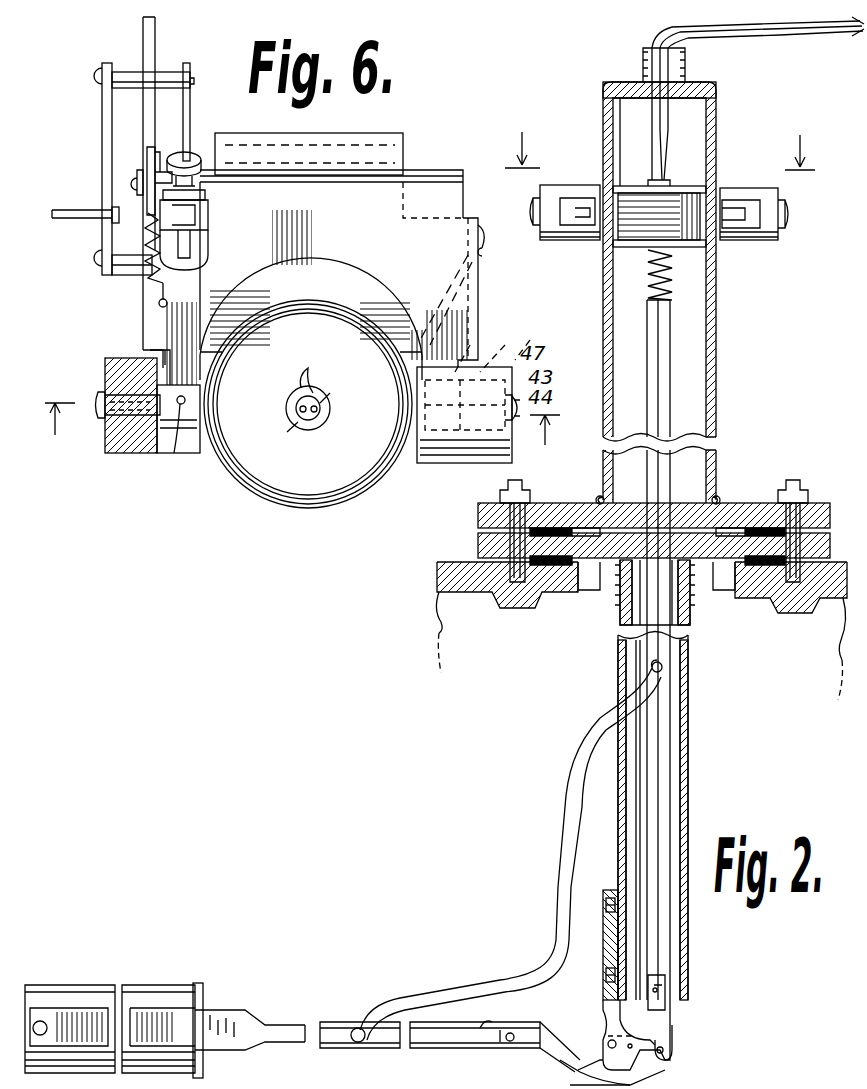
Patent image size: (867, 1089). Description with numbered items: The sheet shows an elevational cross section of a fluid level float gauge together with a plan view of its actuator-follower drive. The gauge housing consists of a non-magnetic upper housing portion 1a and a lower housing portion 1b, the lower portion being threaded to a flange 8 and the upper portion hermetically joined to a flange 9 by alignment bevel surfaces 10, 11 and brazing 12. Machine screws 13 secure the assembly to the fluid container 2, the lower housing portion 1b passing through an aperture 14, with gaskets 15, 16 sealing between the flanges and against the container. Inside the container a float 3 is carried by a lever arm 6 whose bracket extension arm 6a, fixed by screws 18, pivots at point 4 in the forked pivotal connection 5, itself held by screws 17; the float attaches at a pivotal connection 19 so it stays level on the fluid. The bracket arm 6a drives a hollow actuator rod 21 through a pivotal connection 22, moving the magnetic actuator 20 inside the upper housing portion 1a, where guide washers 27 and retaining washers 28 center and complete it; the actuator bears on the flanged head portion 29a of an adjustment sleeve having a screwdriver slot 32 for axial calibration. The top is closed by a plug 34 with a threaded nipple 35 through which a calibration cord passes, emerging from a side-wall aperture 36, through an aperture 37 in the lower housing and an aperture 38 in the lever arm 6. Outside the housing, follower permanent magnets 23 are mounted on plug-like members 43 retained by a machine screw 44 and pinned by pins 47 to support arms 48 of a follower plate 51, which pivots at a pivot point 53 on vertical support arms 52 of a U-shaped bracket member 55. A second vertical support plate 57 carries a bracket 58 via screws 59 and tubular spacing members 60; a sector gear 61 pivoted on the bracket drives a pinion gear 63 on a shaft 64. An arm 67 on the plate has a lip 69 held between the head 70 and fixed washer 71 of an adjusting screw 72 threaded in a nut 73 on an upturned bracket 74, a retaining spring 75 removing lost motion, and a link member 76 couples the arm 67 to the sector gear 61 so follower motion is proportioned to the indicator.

In FIG. 6, the upper housing portion 1a is at (335, 505).
In FIG. 2, the upper housing portion 1a is at (717, 320).
In FIG. 2, the lower housing portion 1b is at (690, 720).
In FIG. 2, the fluid container 2 is at (462, 592).
In FIG. 6, the float 3 is at (302, 437).
In FIG. 2, the float 3 is at (175, 985).
In FIG. 2, the pivotal connection point 4 is at (606, 1042).
In FIG. 2, the pivotal connection 5 is at (603, 948).
In FIG. 2, the lever arm 6 is at (660, 136).
In FIG. 2, the bracket extension arm 6a is at (640, 1088).
In FIG. 2, the flange 8 is at (610, 580).
In FIG. 2, the flange 9 is at (726, 503).
In FIG. 2, the alignment bevel surface 10 is at (686, 525).
In FIG. 2, the alignment bevel surface 11 is at (748, 505).
In FIG. 2, the brazing 12 is at (598, 498).
In FIG. 2, the machine screws 13 is at (500, 490).
In FIG. 2, the aperture 14 is at (590, 590).
In FIG. 2, the sealant or gasket 15 is at (556, 503).
In FIG. 2, the sealant or gasket 16 is at (750, 600).
In FIG. 2, the screws 17 is at (606, 908).
In FIG. 2, the screws 18 is at (485, 1010).
In FIG. 2, the pivotal connection 19 is at (45, 1020).
In FIG. 6, the magnetic actuator 20 is at (345, 338).
In FIG. 2, the magnetic actuator 20 is at (693, 174).
In FIG. 2, the actuator rod 21 is at (670, 758).
In FIG. 2, the pivotal connection 22 is at (672, 1048).
In FIG. 6, the follower permanent magnets 23 is at (166, 453).
In FIG. 2, the follower permanent magnets 23 is at (565, 240).
In FIG. 6, the guide washer 27 is at (305, 503).
In FIG. 6, the retaining washers 28 is at (282, 490).
In FIG. 6, the flanged head portion 29a is at (315, 430).
In FIG. 6, the screwdriver slot 32 is at (330, 393).
In FIG. 2, the plug 34 is at (692, 88).
In FIG. 2, the nipple 35 is at (643, 55).
In FIG. 2, the side-wall aperture 36 is at (664, 670).
In FIG. 2, the aperture 37 is at (618, 690).
In FIG. 2, the aperture 38 is at (362, 1043).
In FIG. 6, the plug-like member 43 is at (140, 453).
In FIG. 6, the machine screw 44 is at (100, 390).
In FIG. 6, the pins 47 is at (187, 444).
In FIG. 6, the support arms 48 is at (165, 348).
In FIG. 6, the follower plate 51 is at (432, 298).
In FIG. 6, the vertical support arms 52 is at (478, 262).
In FIG. 6, the pivot point 53 is at (491, 222).
In FIG. 6, the U-shaped bracket member 55 is at (300, 140).
In FIG. 6, the second vertical support plate 57 is at (190, 103).
In FIG. 6, the bracket 58 is at (102, 143).
In FIG. 6, the screws 59 is at (98, 74).
In FIG. 6, the tubular spacing members 60 is at (123, 72).
In FIG. 6, the sector gear 61 is at (158, 36).
In FIG. 6, the pinion gear 63 is at (146, 240).
In FIG. 6, the shaft 64 is at (72, 210).
In FIG. 6, the arm 67 is at (147, 146).
In FIG. 6, the lip 69 is at (161, 172).
In FIG. 6, the head 70 is at (188, 155).
In FIG. 6, the fixed washer 71 is at (200, 187).
In FIG. 6, the adjusting screw 72 is at (196, 247).
In FIG. 6, the nut 73 is at (208, 222).
In FIG. 6, the upturned bracket 74 is at (205, 200).
In FIG. 6, the retaining spring 75 is at (168, 285).
In FIG. 6, the link member 76 is at (138, 196).